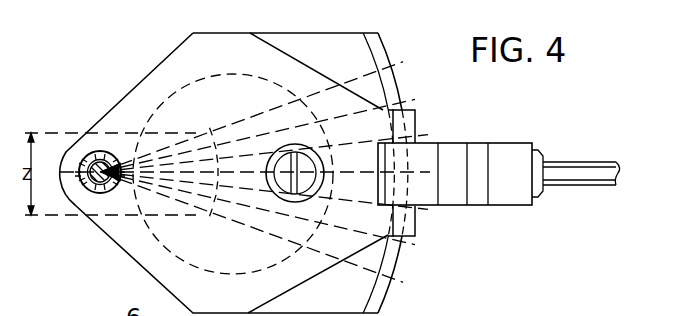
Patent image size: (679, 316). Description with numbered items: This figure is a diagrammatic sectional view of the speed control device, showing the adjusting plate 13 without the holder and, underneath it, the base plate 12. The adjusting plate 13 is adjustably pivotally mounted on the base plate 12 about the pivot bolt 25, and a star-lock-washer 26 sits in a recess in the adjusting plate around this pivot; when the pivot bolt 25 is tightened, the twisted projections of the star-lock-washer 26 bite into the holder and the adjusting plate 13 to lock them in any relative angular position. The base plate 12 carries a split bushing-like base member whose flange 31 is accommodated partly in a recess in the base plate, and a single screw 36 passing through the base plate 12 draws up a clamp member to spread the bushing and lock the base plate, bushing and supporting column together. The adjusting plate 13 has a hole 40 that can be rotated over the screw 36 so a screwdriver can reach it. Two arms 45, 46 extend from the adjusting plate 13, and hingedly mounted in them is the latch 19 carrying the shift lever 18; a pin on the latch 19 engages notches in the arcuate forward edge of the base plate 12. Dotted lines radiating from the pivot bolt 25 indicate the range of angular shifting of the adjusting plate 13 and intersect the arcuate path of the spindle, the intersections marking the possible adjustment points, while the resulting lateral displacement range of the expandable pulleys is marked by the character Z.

The base plate 12 is at (298, 50).
The adjusting plate 13 is at (237, 48).
The shift lever 18 is at (557, 171).
The latch 19 is at (508, 152).
The pivot bolt 25 is at (90, 192).
The star-lock-washer 26 is at (80, 166).
The flange 31 is at (165, 253).
The screw 36 is at (283, 162).
The hole 40 is at (290, 202).
The arm 45 is at (420, 224).
The arm 46 is at (416, 128).